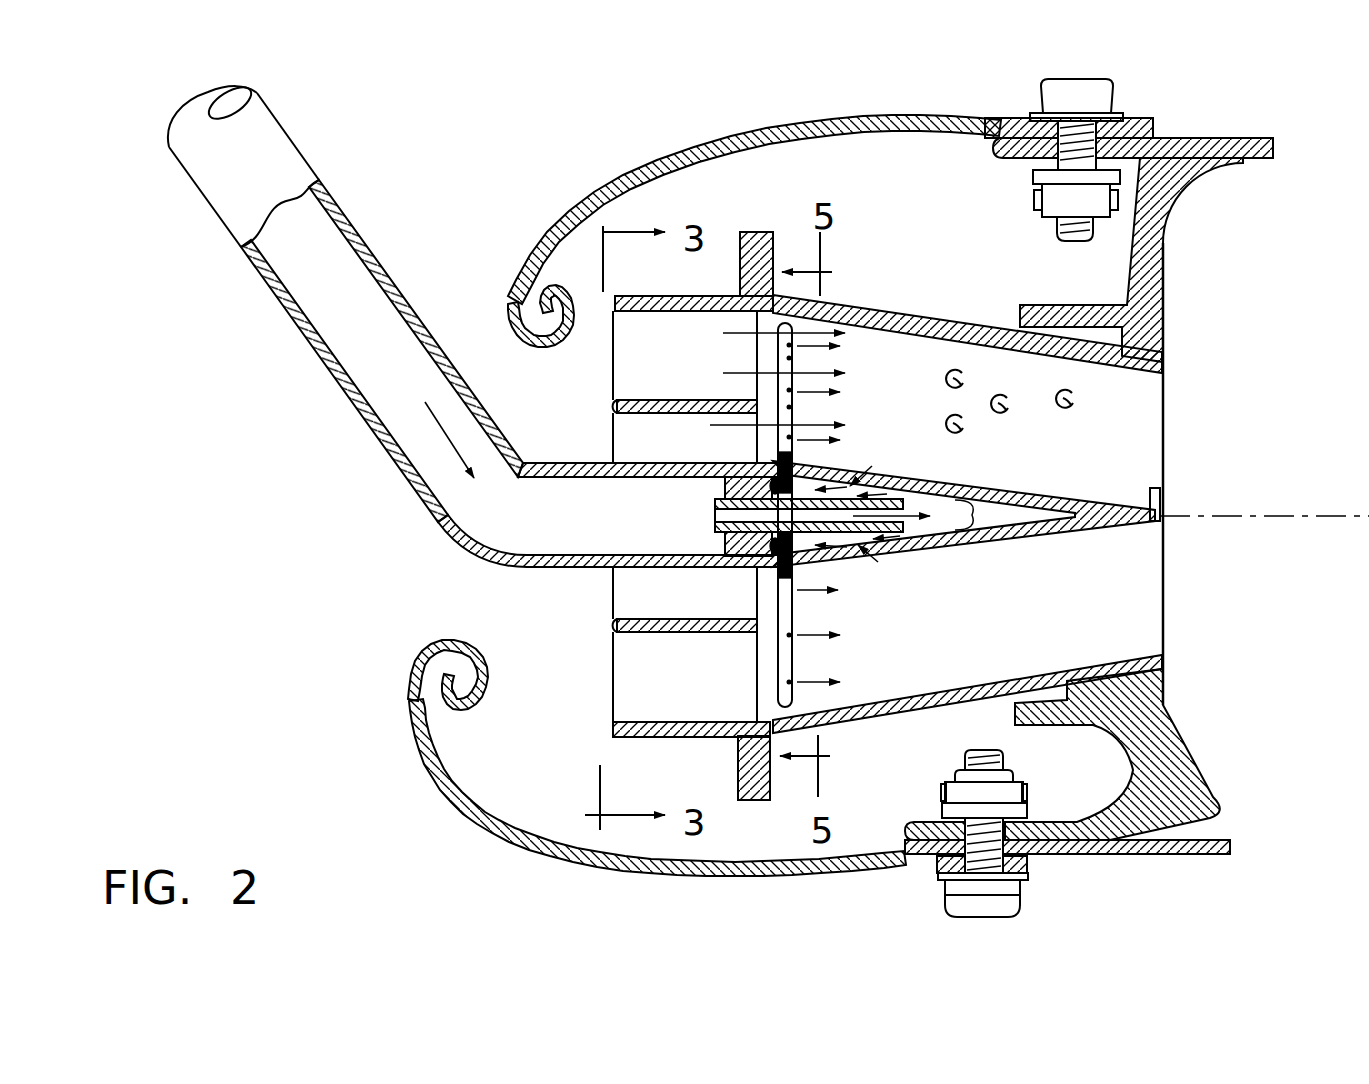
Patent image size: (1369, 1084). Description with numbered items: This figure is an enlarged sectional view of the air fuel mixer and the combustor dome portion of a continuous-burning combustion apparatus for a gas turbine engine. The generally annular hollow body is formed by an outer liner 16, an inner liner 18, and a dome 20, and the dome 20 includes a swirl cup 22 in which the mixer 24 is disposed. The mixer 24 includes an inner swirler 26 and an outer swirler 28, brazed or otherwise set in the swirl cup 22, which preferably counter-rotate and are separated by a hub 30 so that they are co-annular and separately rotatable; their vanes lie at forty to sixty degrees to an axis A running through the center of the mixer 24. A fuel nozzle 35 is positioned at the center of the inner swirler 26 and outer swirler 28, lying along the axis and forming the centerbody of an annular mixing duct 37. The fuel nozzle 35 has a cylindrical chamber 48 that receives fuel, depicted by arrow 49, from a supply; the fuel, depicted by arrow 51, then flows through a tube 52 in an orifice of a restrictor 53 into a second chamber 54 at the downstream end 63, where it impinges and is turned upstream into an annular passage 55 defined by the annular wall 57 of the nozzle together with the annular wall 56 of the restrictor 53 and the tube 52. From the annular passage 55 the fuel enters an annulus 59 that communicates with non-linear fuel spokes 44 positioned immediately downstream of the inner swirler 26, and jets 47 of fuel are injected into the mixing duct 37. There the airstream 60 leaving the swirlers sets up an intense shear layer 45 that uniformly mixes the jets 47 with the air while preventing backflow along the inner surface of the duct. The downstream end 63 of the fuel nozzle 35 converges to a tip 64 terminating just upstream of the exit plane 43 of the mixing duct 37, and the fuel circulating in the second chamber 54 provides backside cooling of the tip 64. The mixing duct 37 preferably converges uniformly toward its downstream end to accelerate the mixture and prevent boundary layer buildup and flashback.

The outer liner 16 is at (1276, 149).
The inner liner 18 is at (1233, 848).
The dome 20 is at (1160, 286).
The swirl cup 22 is at (852, 680).
The mixer 24 is at (603, 676).
The inner swirler 26 is at (608, 433).
The outer swirler 28 is at (608, 357).
The hub 30 is at (640, 618).
The fuel nozzle 35 is at (470, 346).
The annular mixing duct 37 is at (868, 312).
The exit plane 43 is at (1165, 421).
The non-linear fuel spokes 44 is at (790, 408).
The shear layer 45 is at (997, 418).
The jets of fuel 47 is at (806, 350).
The cylindrical chamber 48 is at (546, 530).
The arrow depicting fuel 49 is at (462, 476).
The arrow depicting fuel 51 is at (895, 536).
The tube 52 is at (720, 505).
The restrictor 53 is at (720, 526).
The second chamber 54 is at (1000, 536).
The annular passage 55 is at (856, 482).
The annular wall of restrictor 56 is at (790, 582).
The annular wall of fuel nozzle 57 is at (826, 478).
The annulus 59 is at (783, 462).
The airstream 60 is at (723, 334).
The downstream end 63 is at (1073, 492).
The tip 64 is at (1160, 492).
The axis A is at (1270, 512).